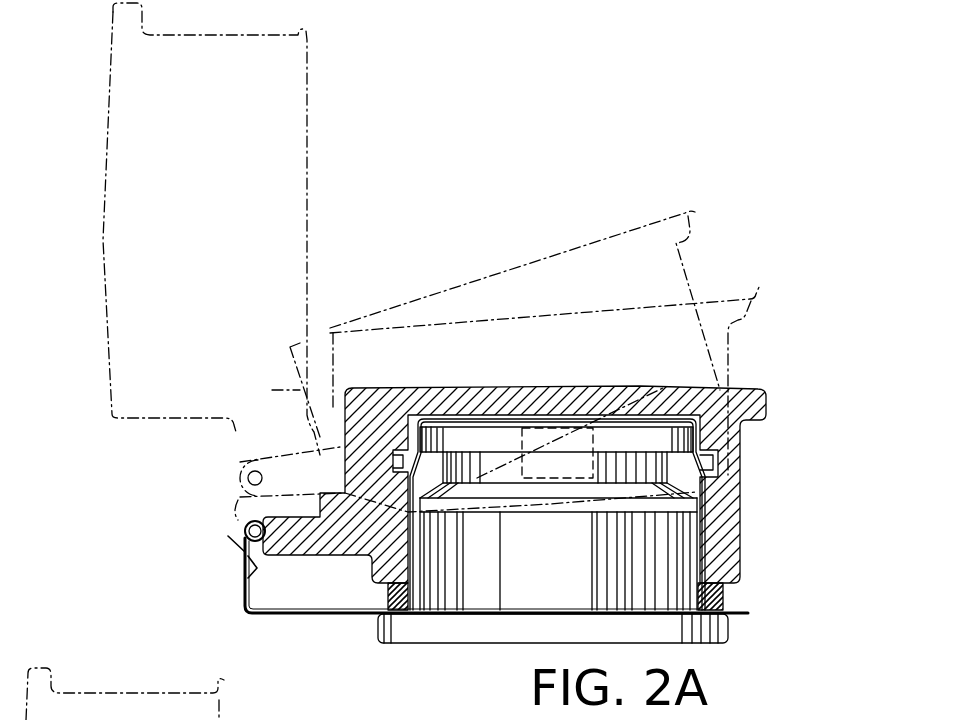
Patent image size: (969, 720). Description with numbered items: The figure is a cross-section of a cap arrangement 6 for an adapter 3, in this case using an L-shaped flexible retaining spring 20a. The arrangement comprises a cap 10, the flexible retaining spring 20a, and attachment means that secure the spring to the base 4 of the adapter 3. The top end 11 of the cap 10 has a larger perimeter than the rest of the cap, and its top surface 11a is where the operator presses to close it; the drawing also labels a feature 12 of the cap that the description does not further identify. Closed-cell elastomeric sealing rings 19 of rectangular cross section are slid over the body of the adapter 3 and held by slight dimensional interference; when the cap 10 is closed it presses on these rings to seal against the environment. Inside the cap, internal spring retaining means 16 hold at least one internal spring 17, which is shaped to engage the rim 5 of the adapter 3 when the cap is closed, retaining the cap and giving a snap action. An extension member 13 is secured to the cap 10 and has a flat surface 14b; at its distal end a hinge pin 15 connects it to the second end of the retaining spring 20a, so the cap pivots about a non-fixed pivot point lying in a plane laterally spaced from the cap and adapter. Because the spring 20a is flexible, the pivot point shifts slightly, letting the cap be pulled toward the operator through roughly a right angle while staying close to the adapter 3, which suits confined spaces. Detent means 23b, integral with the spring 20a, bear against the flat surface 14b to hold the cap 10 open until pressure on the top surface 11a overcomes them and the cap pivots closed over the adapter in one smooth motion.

The adapter 3 is at (497, 592).
The base 4 is at (425, 633).
The rim 5 is at (665, 434).
The cap arrangement 6 is at (368, 255).
The cap 10 is at (740, 518).
The top end 11 is at (136, 4).
The top surface 11a is at (100, 259).
The panel flange 12 is at (308, 34).
The extension member 13 is at (258, 460).
The flat surface 14b is at (240, 476).
The hinge pin 15 is at (246, 526).
The internal spring retaining means 16 is at (716, 470).
The internal spring 17 is at (716, 462).
The closed-cell elastomeric sealing ring 19 is at (728, 596).
The L-shaped flexible retaining spring 20a is at (243, 601).
The detent means 23b is at (232, 542).